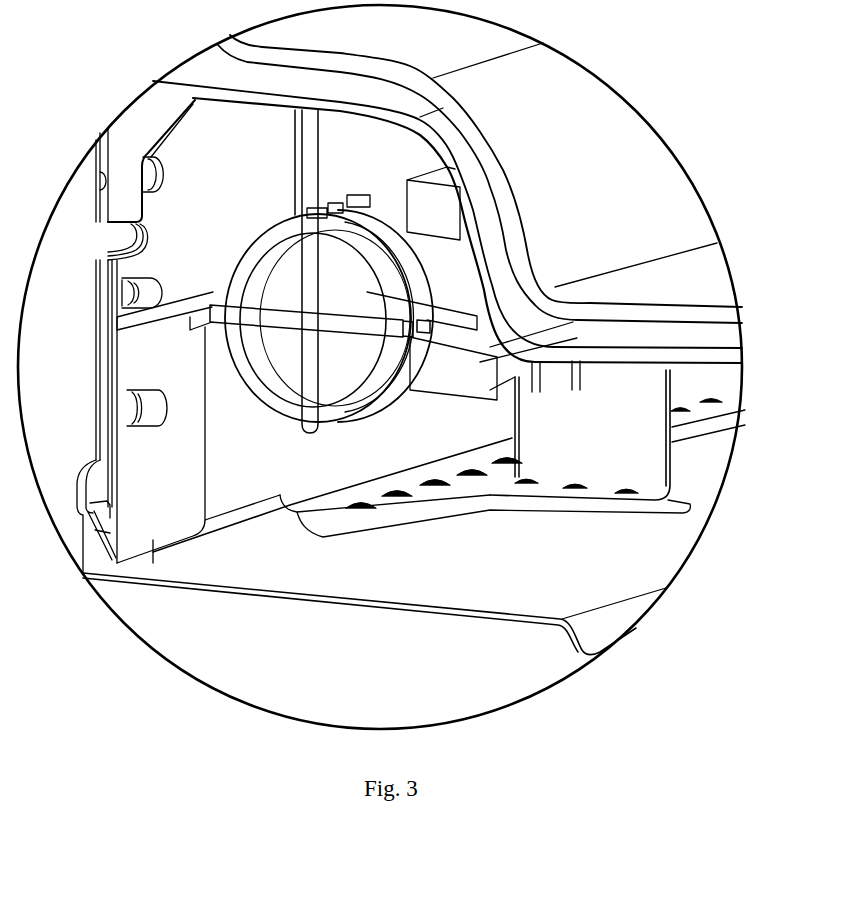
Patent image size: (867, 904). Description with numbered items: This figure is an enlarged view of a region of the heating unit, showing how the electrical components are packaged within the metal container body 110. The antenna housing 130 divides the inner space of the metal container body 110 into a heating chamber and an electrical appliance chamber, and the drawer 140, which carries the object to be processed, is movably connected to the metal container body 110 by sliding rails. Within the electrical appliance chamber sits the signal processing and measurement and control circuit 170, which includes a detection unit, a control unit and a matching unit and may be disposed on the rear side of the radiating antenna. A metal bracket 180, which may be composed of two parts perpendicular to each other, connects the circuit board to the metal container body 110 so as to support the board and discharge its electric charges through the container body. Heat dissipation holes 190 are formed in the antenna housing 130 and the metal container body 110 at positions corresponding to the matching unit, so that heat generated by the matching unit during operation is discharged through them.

The metal container body 110 is at (433, 577).
The antenna housing 130 is at (695, 343).
The drawer 140 is at (670, 197).
The signal processing and measurement and control circuit 170 is at (337, 327).
The metal bracket 180 is at (610, 463).
The heat dissipation holes 190 is at (108, 244).